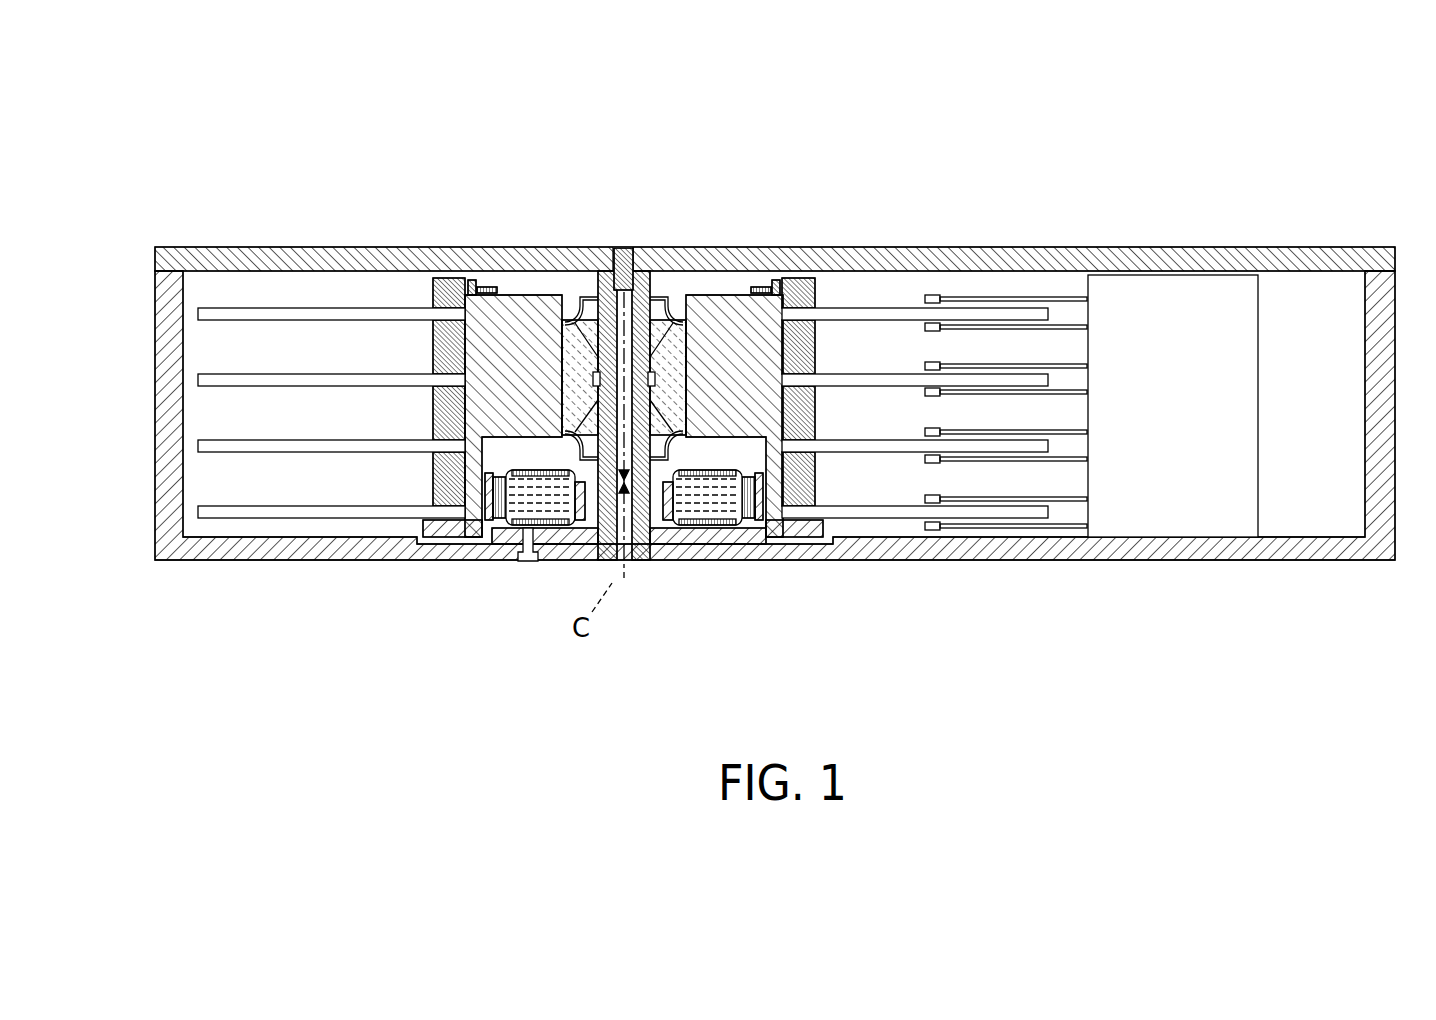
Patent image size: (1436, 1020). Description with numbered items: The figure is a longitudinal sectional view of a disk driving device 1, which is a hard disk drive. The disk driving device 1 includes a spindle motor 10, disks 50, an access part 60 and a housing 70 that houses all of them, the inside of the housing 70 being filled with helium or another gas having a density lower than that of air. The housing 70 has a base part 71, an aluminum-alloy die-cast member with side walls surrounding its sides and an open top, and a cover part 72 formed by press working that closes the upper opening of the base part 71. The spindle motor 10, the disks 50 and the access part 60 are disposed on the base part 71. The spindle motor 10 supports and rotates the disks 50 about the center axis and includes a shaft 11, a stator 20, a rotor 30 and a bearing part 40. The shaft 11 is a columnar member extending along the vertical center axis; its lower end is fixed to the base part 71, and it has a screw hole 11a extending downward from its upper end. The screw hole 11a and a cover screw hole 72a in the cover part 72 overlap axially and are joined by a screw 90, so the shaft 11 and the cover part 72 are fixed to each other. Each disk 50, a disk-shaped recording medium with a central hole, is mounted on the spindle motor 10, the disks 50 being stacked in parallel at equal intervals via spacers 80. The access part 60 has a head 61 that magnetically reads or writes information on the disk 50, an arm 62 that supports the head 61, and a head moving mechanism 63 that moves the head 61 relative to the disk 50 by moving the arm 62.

The disk driving device 1 is at (222, 220).
The spindle motor 10 is at (718, 497).
The shaft 11 is at (671, 400).
The screw hole 11a is at (652, 288).
The stator 20 is at (503, 495).
The rotor 30 is at (750, 387).
The bearing part 40 is at (537, 305).
The disk 50 is at (888, 315).
The access part 60 is at (1091, 497).
The head 61 is at (933, 500).
The arm 62 is at (1013, 497).
The head moving mechanism 63 is at (1112, 508).
The housing 70 is at (782, 313).
The base part 71 is at (1395, 292).
The cover part 72 is at (775, 197).
The cover screw hole 72a is at (637, 263).
The spacer 80 is at (815, 287).
The screw 90 is at (621, 250).